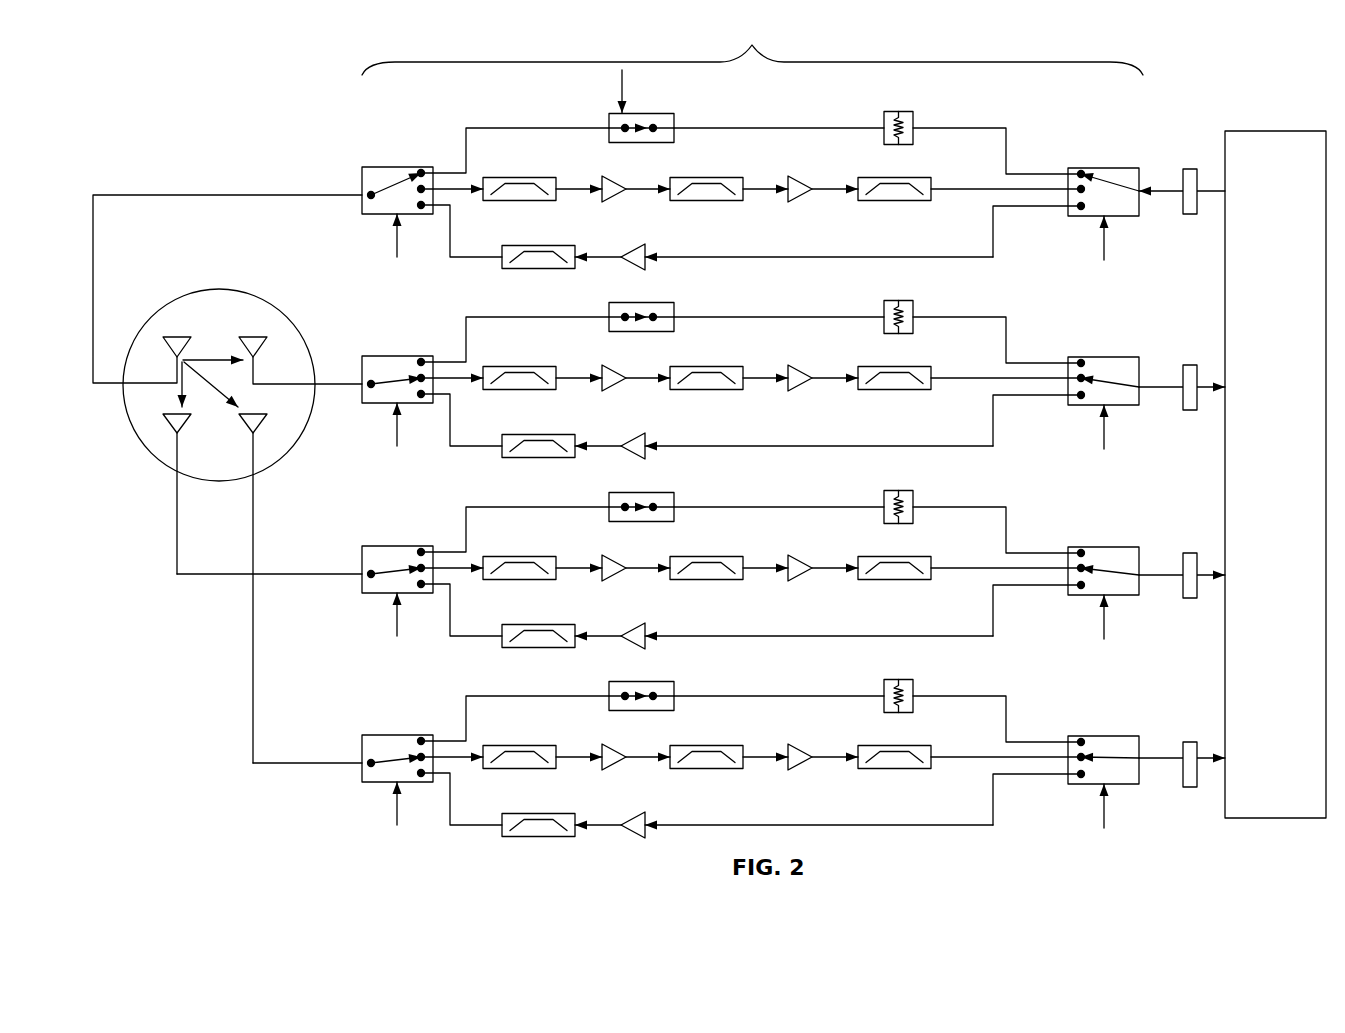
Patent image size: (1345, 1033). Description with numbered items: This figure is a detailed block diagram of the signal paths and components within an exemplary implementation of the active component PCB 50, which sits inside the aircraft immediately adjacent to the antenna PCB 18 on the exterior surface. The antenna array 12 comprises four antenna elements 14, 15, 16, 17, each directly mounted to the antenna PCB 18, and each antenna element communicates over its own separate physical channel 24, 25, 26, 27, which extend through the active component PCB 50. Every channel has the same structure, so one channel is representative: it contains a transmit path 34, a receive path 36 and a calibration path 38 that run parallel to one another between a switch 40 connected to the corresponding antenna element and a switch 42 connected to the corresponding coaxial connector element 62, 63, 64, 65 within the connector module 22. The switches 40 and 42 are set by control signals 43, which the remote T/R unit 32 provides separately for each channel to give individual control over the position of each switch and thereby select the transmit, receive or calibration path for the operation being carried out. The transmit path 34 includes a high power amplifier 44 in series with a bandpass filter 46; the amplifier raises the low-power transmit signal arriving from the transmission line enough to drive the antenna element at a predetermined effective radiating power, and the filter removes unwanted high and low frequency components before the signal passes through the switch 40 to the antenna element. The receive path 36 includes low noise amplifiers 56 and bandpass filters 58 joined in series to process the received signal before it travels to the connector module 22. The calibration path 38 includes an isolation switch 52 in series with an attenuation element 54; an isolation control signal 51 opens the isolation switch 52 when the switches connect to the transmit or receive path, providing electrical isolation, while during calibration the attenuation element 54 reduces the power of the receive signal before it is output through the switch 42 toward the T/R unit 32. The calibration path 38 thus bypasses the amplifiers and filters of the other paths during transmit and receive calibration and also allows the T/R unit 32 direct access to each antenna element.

The antenna array 12 is at (220, 290).
The antenna element 14 is at (164, 346).
The antenna element 15 is at (259, 344).
The antenna element 16 is at (246, 426).
The antenna element 17 is at (167, 425).
The antenna printed circuit board 18 is at (222, 482).
The connector module 22 is at (1202, 824).
The channel 24 is at (337, 183).
The channel 25 is at (343, 372).
The channel 26 is at (347, 750).
The channel 27 is at (347, 562).
The remote transmit/receive unit 32 is at (1277, 131).
The transmit path 34 is at (848, 257).
The receive path 36 is at (955, 188).
The calibration path 38 is at (820, 128).
The switch 40 is at (398, 166).
The switch 42 is at (1105, 167).
The control signal 43 is at (397, 244).
The high power amplifier 44 is at (635, 248).
The bandpass filter 46 is at (535, 246).
The active component PCB 50 is at (752, 49).
The isolation control signal 51 is at (616, 82).
The isolation switch 52 is at (655, 113).
The attenuation element 54 is at (900, 113).
The low noise amplifier 56 is at (612, 177).
The bandpass filter 58 is at (520, 178).
The coaxial connector element 62 is at (1190, 168).
The coaxial connector element 63 is at (1190, 364).
The coaxial connector element 64 is at (1190, 552).
The coaxial connector element 65 is at (1190, 741).